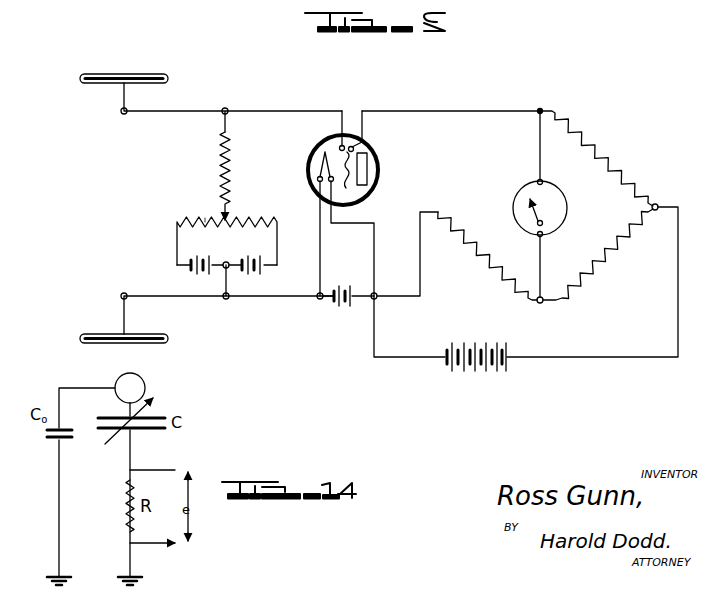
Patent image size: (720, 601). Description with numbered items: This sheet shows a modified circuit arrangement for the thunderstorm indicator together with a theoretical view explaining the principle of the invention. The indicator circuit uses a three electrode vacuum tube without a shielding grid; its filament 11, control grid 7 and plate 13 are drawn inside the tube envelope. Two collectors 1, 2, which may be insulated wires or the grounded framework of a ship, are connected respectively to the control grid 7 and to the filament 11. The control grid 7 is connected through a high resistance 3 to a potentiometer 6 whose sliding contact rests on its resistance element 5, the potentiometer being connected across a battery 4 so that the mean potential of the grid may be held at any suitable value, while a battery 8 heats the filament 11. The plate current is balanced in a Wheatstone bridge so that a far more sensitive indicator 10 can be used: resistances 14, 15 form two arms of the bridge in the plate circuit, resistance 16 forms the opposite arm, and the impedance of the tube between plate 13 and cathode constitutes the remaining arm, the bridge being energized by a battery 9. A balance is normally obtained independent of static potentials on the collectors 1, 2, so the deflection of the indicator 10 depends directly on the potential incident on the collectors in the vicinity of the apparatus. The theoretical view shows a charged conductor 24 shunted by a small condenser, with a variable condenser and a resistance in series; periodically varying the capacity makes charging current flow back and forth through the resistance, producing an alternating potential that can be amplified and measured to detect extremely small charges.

In FIG. 2, the collector 1 is at (166, 46).
In FIG. 2, the collector 2 is at (124, 346).
In FIG. 2, the high resistance 3 is at (218, 170).
In FIG. 2, the battery 4 is at (227, 266).
In FIG. 2, the potentiometer resistance 5 is at (240, 216).
In FIG. 2, the potentiometer 6 is at (208, 216).
In FIG. 2, the control grid 7 is at (349, 146).
In FIG. 2, the battery 8 is at (330, 306).
In FIG. 2, the battery 9 is at (478, 378).
In FIG. 2, the indicator 10 is at (533, 191).
In FIG. 2, the filament 11 is at (323, 150).
In FIG. 2, the plate 13 is at (367, 158).
In FIG. 2, the resistance 14 is at (619, 156).
In FIG. 2, the resistance 15 is at (612, 270).
In FIG. 2, the resistance 16 is at (478, 260).
In FIG. 14, the conductor 24 is at (145, 388).